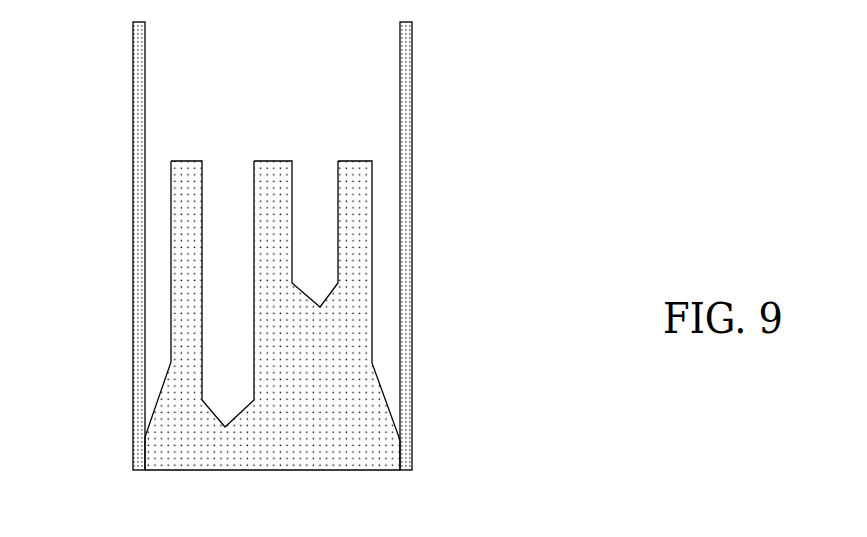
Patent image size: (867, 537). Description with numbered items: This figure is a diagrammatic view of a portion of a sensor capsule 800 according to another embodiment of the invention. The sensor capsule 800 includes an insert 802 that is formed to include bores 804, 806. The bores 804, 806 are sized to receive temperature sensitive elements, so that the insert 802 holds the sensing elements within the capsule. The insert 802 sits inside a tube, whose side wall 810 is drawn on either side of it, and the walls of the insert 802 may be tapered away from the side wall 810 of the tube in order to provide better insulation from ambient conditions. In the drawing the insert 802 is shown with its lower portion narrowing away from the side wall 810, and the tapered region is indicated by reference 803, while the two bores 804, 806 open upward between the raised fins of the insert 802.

The sensor capsule 800 is at (412, 190).
The side wall 810 is at (133, 218).
The insert 802 is at (382, 395).
The left sloped portion of molded body 803 is at (165, 380).
The bore 804 is at (292, 193).
The bore 806 is at (202, 197).